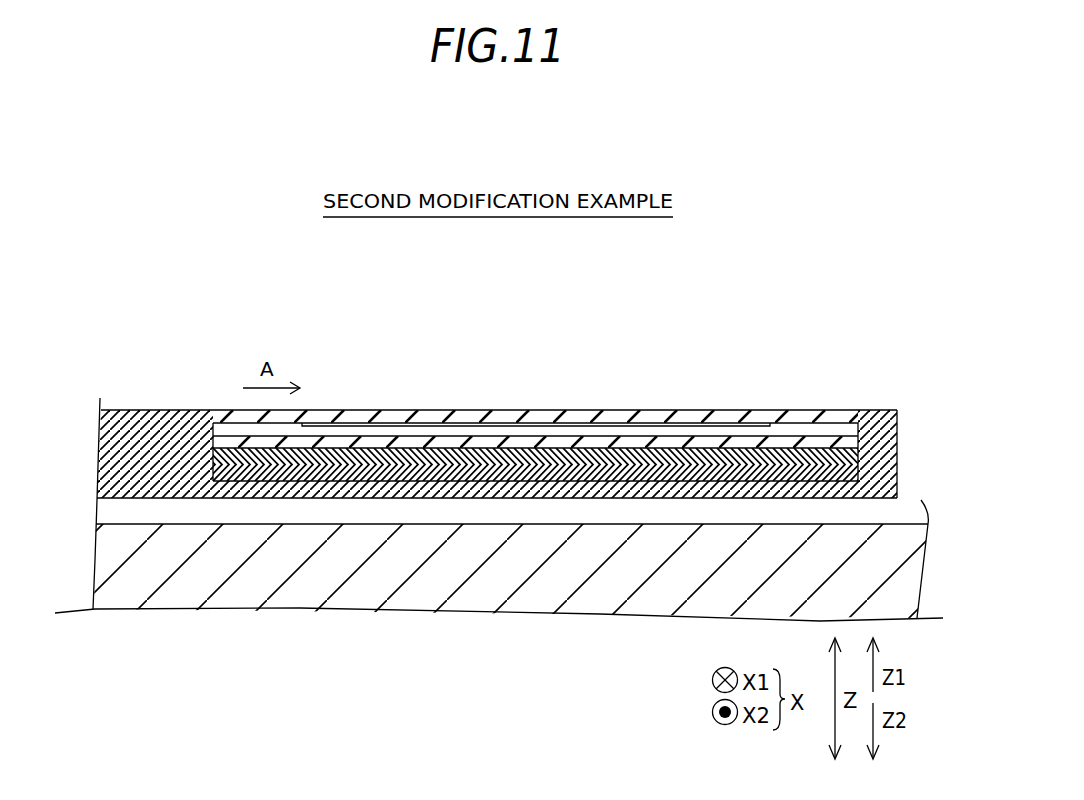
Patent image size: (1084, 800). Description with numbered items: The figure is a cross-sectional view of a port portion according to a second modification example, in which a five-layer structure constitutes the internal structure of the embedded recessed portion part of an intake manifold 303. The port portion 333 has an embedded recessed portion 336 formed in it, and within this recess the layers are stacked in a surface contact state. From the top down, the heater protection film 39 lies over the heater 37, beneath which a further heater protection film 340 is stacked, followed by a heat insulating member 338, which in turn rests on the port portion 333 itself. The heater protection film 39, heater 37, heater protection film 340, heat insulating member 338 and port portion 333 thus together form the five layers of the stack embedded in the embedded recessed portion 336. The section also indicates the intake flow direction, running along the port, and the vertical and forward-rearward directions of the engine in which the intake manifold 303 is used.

The intake manifold 303 is at (533, 389).
The port portion 333 is at (863, 392).
The embedded recessed portion 336 is at (772, 401).
The heat insulating member 338 is at (680, 460).
The heater protection film 340 is at (333, 447).
The heater 37 is at (600, 435).
The heater protection film 39 is at (422, 418).